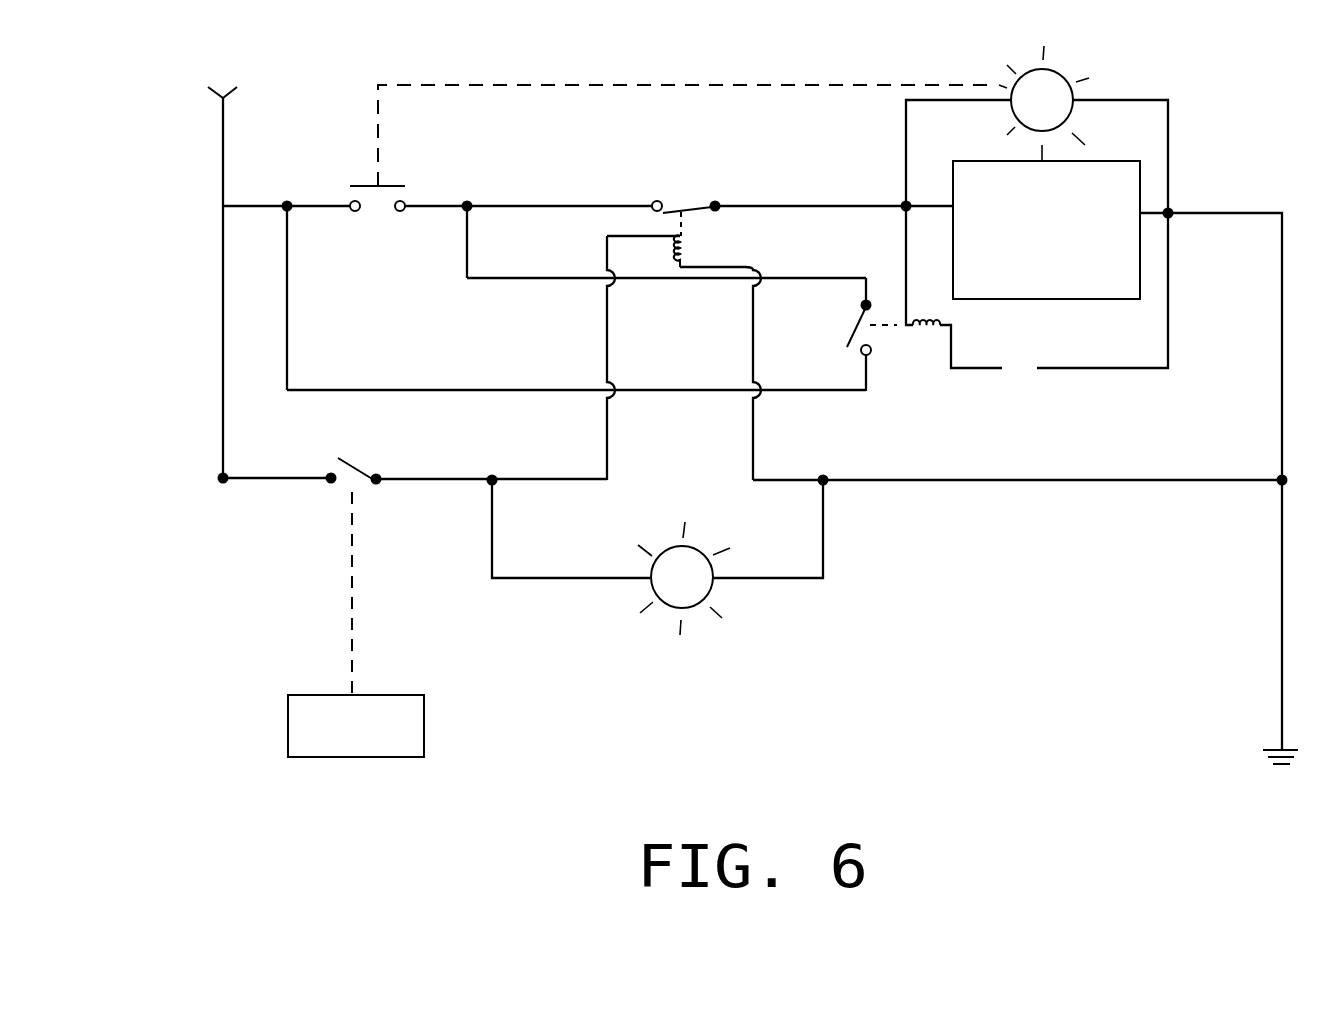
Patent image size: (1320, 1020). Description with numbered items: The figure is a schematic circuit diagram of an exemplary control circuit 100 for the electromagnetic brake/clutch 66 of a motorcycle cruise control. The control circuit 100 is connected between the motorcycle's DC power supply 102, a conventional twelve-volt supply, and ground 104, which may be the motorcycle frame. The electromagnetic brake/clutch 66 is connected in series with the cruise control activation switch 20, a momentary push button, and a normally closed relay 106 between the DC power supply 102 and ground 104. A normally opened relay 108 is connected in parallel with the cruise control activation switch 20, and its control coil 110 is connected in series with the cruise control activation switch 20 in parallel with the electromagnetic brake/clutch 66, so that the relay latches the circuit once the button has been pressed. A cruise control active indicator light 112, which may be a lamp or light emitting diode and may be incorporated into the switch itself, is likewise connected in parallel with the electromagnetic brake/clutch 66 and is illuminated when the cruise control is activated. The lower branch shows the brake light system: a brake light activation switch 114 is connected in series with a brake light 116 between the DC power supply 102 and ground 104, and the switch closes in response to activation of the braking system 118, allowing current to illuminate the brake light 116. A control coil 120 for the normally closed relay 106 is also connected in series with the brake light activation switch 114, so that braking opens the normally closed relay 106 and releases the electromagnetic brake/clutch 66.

The control circuit 100 is at (1011, 576).
The DC power supply 102 is at (232, 97).
The ground 104 is at (1273, 742).
The normally closed relay 106 is at (695, 208).
The normally opened relay 108 is at (850, 327).
The control coil 110 is at (932, 318).
The cruise control active indicator light 112 is at (1075, 93).
The brake light activation switch 114 is at (357, 473).
The brake light 116 is at (712, 592).
The braking system 118 is at (424, 733).
The control coil 120 is at (684, 253).
The cruise control activation switch 20 is at (389, 187).
The electromagnetic brake/clutch 66 is at (953, 161).